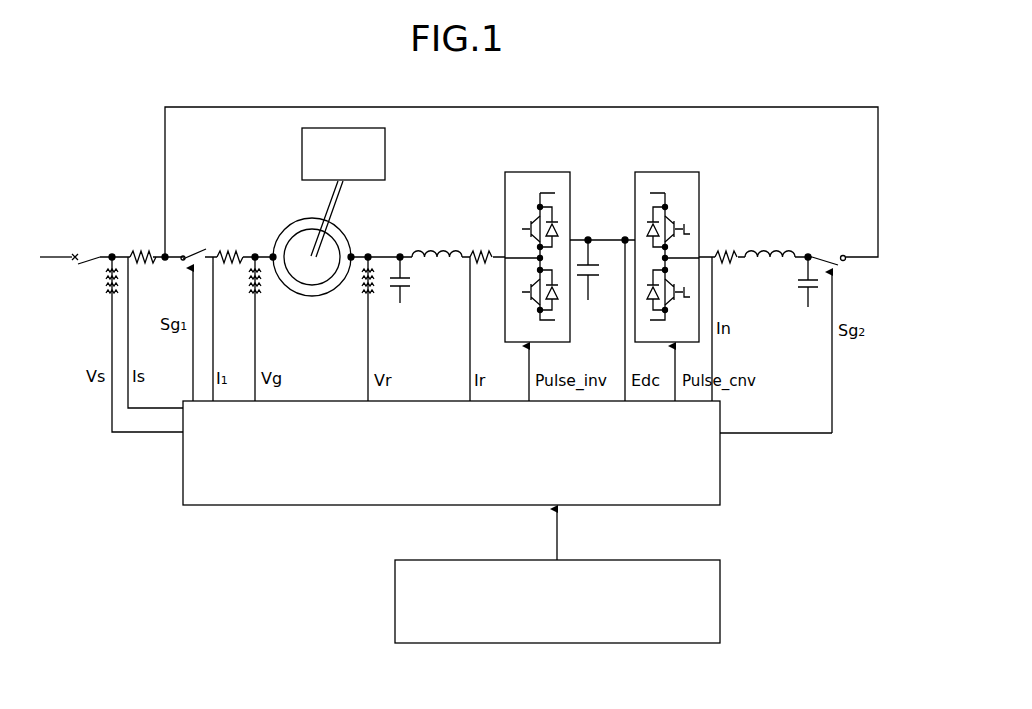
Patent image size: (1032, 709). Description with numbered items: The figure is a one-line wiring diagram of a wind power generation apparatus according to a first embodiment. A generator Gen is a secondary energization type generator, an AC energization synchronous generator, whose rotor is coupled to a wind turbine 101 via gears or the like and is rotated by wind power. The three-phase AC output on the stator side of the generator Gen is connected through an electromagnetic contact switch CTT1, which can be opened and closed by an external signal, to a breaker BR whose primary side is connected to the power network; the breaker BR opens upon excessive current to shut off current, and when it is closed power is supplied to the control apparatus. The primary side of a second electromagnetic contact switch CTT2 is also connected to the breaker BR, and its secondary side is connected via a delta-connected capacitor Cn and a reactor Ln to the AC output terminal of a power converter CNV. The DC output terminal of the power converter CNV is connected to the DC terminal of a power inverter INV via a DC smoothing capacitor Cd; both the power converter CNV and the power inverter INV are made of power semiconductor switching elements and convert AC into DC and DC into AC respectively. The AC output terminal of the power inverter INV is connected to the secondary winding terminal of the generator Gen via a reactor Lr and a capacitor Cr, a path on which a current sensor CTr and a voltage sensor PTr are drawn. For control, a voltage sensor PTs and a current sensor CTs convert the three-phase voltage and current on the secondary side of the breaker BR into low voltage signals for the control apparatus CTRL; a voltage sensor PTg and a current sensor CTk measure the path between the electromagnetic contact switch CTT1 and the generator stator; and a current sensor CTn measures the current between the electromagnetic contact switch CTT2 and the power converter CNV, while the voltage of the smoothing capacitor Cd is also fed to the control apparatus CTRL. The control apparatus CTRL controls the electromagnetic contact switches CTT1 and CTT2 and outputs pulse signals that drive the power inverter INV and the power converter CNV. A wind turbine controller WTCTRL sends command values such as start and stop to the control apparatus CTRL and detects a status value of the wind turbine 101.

The wind turbine 101 is at (385, 155).
The breaker BR is at (86, 248).
The voltage sensor PTs is at (122, 344).
The current sensor CTs is at (154, 320).
The electromagnetic contact switch CTT1 is at (186, 251).
The current sensor CTk is at (217, 257).
The generator Gen is at (312, 238).
The voltage sensor PTg is at (270, 329).
The voltage sensor PTr is at (355, 329).
The capacitor Cr is at (412, 280).
The reactor Lr is at (437, 241).
The current sensor CTr is at (481, 315).
The power inverter INV is at (537, 246).
The DC smoothing capacitor Cd is at (597, 270).
The power converter CNV is at (667, 246).
The current sensor CTn is at (727, 314).
The reactor Ln is at (770, 240).
The capacitor Cn is at (792, 282).
The electromagnetic contact switch CTT2 is at (833, 333).
The control apparatus CTRL is at (507, 425).
The wind turbine controller WTCTRL is at (572, 576).